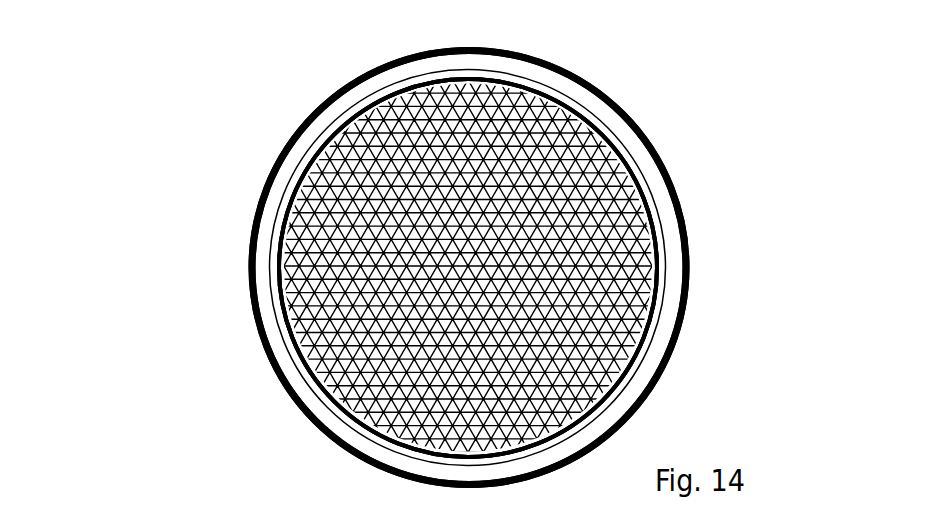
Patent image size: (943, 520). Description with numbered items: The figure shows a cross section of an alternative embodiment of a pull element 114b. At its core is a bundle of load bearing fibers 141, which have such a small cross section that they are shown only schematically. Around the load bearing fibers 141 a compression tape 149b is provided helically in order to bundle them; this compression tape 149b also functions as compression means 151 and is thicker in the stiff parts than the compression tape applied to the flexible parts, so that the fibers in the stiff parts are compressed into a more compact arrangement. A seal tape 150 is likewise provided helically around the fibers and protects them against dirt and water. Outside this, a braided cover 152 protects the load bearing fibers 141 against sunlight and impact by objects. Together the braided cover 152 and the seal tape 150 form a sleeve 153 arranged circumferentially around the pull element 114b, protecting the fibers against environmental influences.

The pull element 114b is at (664, 108).
The load bearing fibers 141 is at (423, 248).
The compression tape 149b is at (275, 270).
The compression means 151 is at (395, 268).
The seal tape 150 is at (275, 316).
The braided cover 152 is at (272, 367).
The sleeve 153 is at (262, 400).